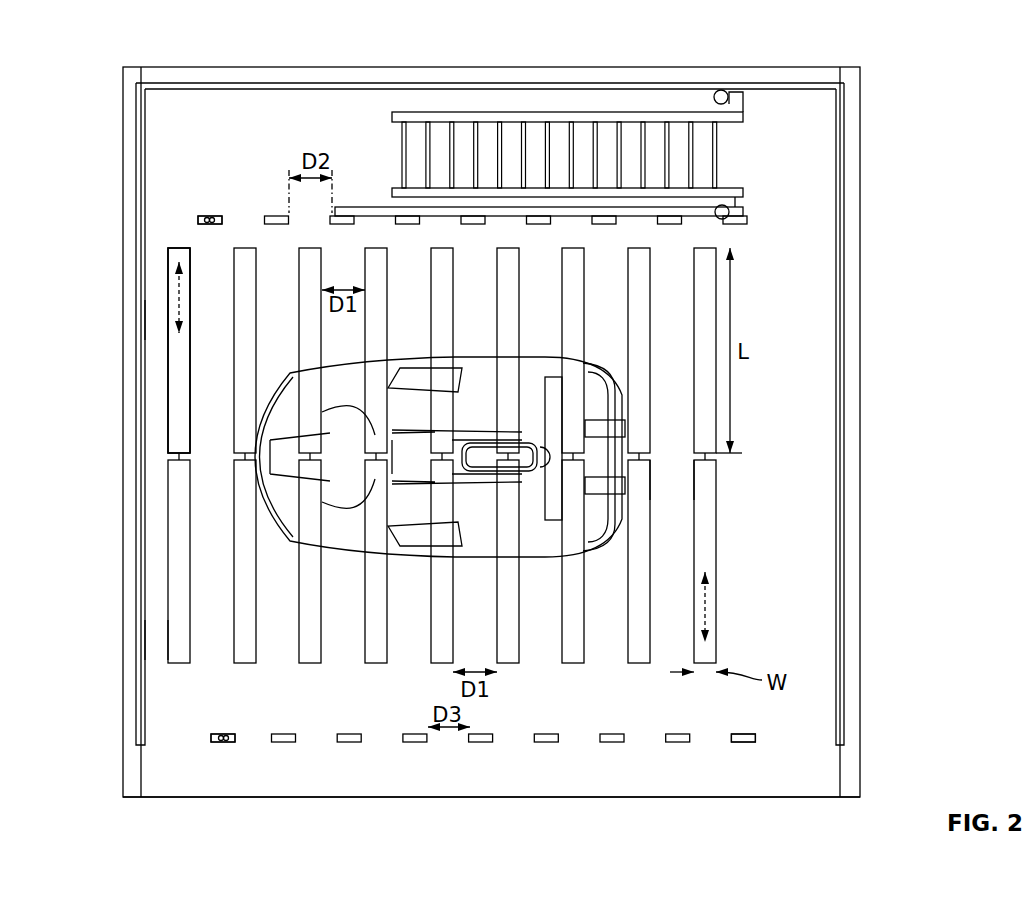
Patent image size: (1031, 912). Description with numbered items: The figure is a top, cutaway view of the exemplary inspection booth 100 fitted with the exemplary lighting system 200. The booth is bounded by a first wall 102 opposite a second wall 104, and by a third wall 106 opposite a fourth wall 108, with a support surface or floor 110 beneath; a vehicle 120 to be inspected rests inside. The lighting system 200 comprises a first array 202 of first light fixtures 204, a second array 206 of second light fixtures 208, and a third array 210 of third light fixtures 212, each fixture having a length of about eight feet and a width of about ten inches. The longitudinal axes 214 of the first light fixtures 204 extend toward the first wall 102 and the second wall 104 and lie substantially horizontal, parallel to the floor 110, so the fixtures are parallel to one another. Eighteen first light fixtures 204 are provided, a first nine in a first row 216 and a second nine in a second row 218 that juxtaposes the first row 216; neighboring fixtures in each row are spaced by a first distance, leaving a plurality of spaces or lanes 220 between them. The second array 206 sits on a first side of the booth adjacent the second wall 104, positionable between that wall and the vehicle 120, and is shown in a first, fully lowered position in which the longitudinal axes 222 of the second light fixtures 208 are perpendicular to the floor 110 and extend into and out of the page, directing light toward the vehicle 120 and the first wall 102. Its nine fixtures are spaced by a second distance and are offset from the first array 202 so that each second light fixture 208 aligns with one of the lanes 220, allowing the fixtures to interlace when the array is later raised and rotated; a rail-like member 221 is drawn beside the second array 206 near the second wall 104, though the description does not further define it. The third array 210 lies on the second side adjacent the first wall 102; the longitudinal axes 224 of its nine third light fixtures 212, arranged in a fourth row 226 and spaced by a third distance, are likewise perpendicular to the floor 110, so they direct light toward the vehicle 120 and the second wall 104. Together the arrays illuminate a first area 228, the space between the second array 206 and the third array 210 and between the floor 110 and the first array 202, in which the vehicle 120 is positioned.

The inspection booth 100 is at (162, 150).
The first wall 102 is at (805, 786).
The second wall 104 is at (565, 83).
The third wall 106 is at (130, 597).
The fourth wall 108 is at (843, 572).
The floor 110 is at (780, 393).
The vehicle 120 is at (458, 352).
The lighting system 200 is at (140, 355).
The first array 202 is at (173, 385).
The first light fixtures 204 is at (182, 393).
The second array 206 is at (170, 222).
The second light fixtures 208 is at (205, 216).
The third array 210 is at (207, 738).
The third light fixtures 212 is at (228, 742).
The longitudinal axes 214 is at (178, 296).
The first row 216 is at (158, 323).
The second row 218 is at (158, 638).
The lanes 220 is at (279, 268).
The upper rail 221 is at (772, 222).
The longitudinal axes 222 is at (226, 219).
The longitudinal axes 224 is at (219, 742).
The fourth row 226 is at (773, 738).
The first area 228 is at (673, 467).